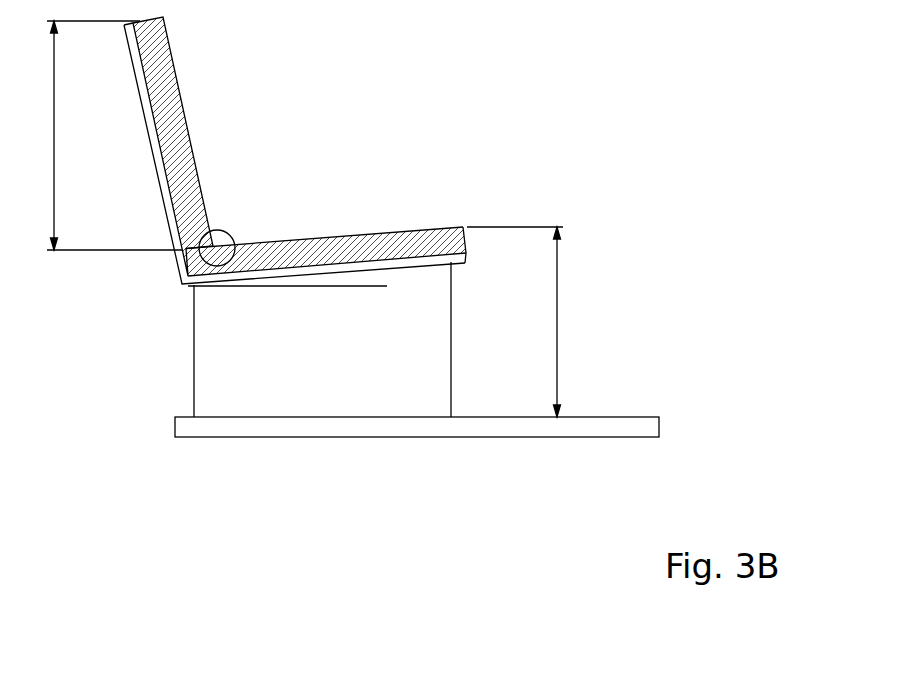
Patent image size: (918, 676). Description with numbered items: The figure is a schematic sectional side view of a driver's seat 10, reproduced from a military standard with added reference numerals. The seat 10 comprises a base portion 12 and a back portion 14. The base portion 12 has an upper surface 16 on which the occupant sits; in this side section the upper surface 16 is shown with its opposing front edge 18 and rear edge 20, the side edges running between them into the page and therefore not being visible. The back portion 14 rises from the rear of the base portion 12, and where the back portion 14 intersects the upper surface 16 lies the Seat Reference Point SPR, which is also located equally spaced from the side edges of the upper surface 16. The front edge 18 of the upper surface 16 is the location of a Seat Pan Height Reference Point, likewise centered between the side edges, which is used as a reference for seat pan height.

The seat 10 is at (434, 112).
The base portion 12 is at (370, 232).
The back portion 14 is at (173, 78).
The upper surface 16 is at (324, 236).
The front edge 18 is at (463, 227).
The rear edge 20 is at (177, 270).
The Seat Reference Point SPR is at (217, 248).